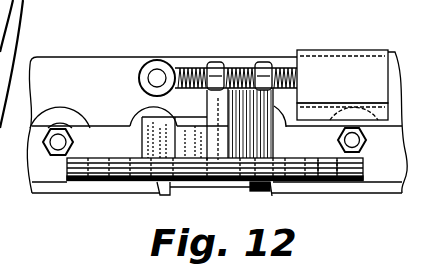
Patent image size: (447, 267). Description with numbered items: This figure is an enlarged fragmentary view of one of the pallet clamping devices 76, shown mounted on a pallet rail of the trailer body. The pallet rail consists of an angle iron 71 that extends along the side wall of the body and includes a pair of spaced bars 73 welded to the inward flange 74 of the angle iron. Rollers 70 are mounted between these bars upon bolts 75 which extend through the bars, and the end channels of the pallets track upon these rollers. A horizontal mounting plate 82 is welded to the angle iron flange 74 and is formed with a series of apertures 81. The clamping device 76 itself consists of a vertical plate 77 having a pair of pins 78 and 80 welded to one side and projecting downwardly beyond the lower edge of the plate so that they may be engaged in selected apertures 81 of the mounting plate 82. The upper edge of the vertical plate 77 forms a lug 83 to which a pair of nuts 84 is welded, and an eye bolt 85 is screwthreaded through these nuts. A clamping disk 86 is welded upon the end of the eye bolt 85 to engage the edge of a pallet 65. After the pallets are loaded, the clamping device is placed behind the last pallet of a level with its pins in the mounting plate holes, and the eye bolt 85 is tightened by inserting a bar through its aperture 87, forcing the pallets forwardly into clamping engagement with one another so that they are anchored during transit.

The pallet 65 is at (359, 62).
The rollers 70 is at (60, 110).
The angle iron 71 is at (111, 72).
The spaced bars 73 is at (100, 134).
The inward flange 74 is at (129, 187).
The bolts 75 is at (62, 144).
The clamping device 76 is at (262, 142).
The vertical plate 77 is at (240, 106).
The pin 78 is at (266, 186).
The pin 80 is at (167, 188).
The apertures 81 is at (326, 173).
The mounting plate 82 is at (87, 170).
The lug 83 is at (218, 102).
The nuts 84 is at (213, 64).
The eye bolt 85 is at (187, 72).
The clamping disk 86 is at (300, 73).
The aperture 87 is at (154, 77).